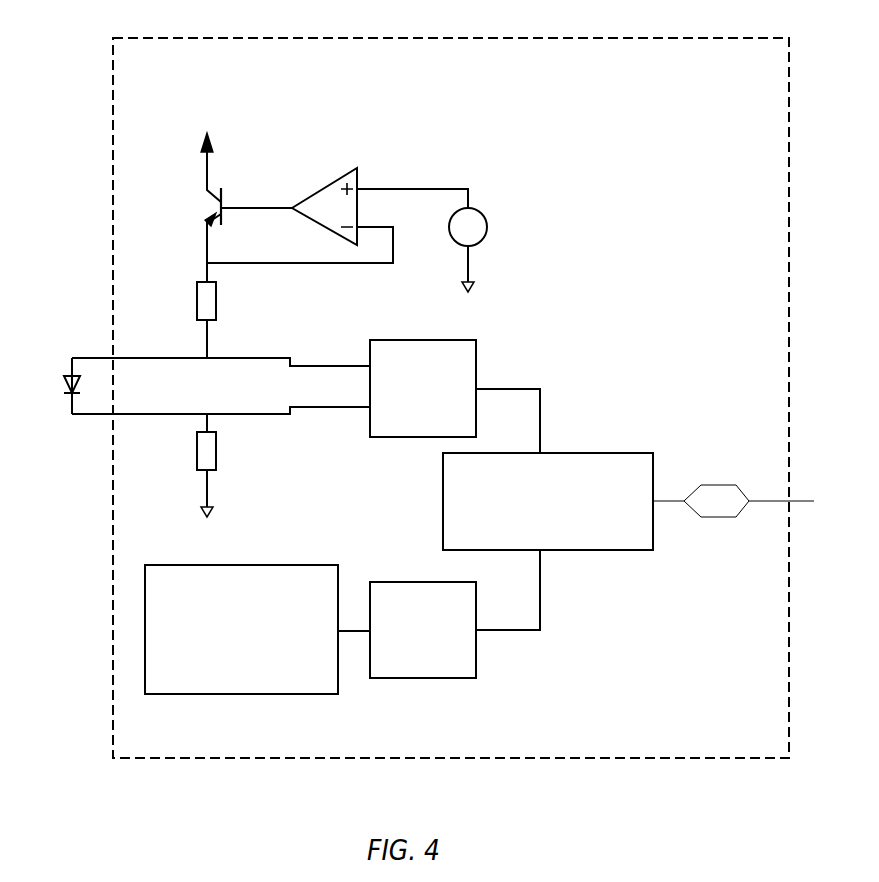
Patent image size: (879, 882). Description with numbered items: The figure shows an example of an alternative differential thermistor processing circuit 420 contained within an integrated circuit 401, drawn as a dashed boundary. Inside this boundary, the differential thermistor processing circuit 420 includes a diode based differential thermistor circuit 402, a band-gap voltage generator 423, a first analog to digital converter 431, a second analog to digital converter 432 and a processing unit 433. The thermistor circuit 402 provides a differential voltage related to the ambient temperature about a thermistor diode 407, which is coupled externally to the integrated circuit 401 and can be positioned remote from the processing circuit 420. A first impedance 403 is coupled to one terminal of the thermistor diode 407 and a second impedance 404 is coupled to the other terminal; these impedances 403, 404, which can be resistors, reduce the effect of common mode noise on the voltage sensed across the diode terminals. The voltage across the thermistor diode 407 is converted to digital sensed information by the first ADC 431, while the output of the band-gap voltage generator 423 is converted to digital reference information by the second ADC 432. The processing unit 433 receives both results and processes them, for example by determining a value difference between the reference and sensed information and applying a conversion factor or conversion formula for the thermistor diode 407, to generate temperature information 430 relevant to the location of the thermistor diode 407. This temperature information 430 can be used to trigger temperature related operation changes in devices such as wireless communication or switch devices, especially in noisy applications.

The integrated circuit 401 is at (637, 34).
The differential thermistor processing circuit 420 is at (428, 98).
The diode based differential thermistor circuit 402 is at (515, 153).
The first impedance 403 is at (217, 293).
The second impedance 404 is at (217, 445).
The thermistor diode 407 is at (63, 382).
The first analog to digital converter 431 is at (477, 370).
The second analog to digital converter 432 is at (420, 578).
The processing unit 433 is at (565, 552).
The temperature information 430 is at (701, 483).
The band-gap voltage generator 423 is at (248, 694).